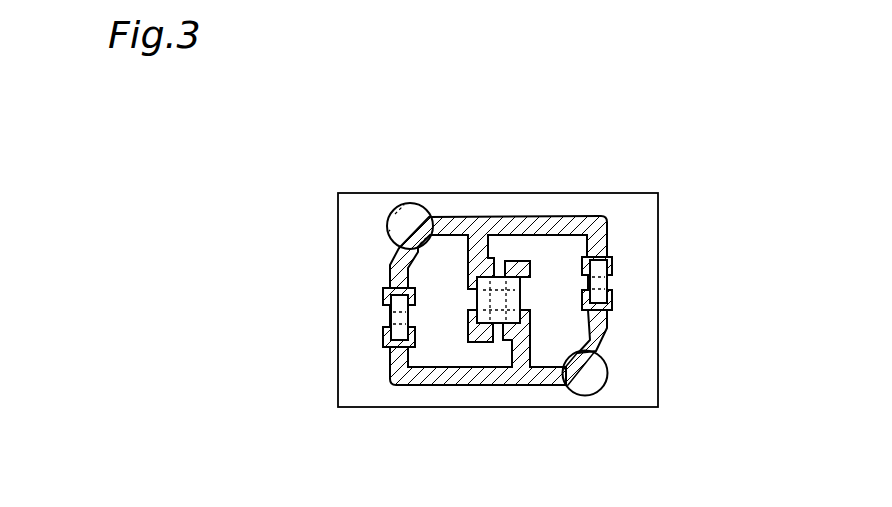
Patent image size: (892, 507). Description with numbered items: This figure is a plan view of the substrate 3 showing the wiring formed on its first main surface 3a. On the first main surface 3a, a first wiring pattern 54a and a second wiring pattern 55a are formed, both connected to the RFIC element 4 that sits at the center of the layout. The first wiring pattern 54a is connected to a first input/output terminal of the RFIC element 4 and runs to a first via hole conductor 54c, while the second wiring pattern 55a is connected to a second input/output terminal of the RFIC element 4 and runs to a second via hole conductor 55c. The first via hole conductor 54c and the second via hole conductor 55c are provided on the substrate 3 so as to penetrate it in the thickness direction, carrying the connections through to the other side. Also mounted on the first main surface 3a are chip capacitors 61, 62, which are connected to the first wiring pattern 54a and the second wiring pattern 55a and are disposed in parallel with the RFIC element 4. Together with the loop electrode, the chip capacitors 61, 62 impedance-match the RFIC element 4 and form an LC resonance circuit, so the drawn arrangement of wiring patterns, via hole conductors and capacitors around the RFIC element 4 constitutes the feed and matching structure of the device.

The substrate 3 is at (528, 269).
The first main surface 3a is at (641, 234).
The RFIC element 4 is at (477, 295).
The first wiring pattern 54a is at (484, 380).
The first via hole conductor 54c is at (581, 398).
The second wiring pattern 55a is at (545, 215).
The second via hole conductor 55c is at (409, 203).
The chip capacitor 61 is at (392, 319).
The chip capacitor 62 is at (607, 281).